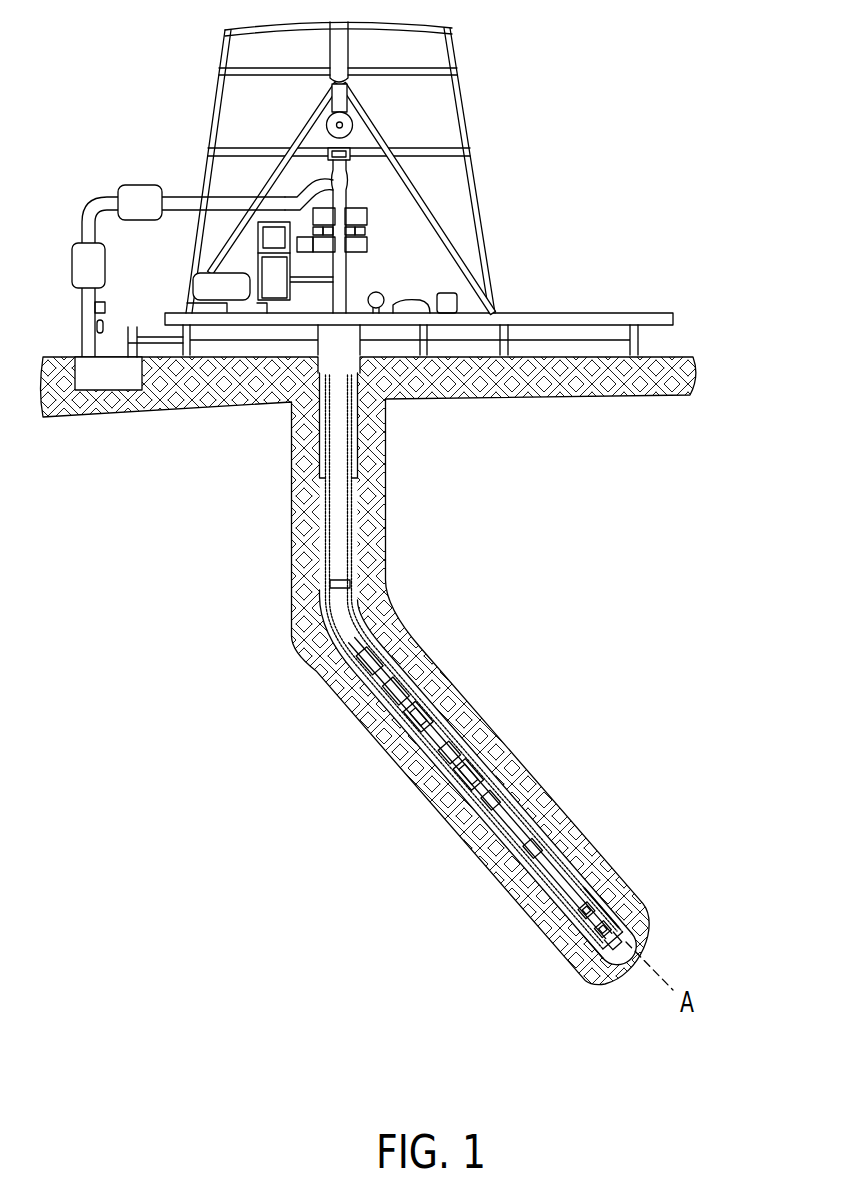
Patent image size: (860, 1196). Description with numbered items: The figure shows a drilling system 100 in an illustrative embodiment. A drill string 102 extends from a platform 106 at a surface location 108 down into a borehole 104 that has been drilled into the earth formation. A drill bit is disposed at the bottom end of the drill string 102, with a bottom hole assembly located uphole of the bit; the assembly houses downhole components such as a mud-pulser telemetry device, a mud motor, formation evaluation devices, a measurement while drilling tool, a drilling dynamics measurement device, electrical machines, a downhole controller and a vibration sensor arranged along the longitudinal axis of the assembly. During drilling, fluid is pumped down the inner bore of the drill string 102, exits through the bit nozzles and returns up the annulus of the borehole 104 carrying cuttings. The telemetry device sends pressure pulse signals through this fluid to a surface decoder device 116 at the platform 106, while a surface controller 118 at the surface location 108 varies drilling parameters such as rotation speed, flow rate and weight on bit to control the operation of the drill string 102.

The drilling system 100 is at (606, 106).
The drill string 102 is at (370, 625).
The borehole 104 is at (355, 558).
The platform 106 is at (604, 320).
The surface location 108 is at (668, 362).
The surface decoder device 116 is at (278, 312).
The surface controller 118 is at (228, 290).